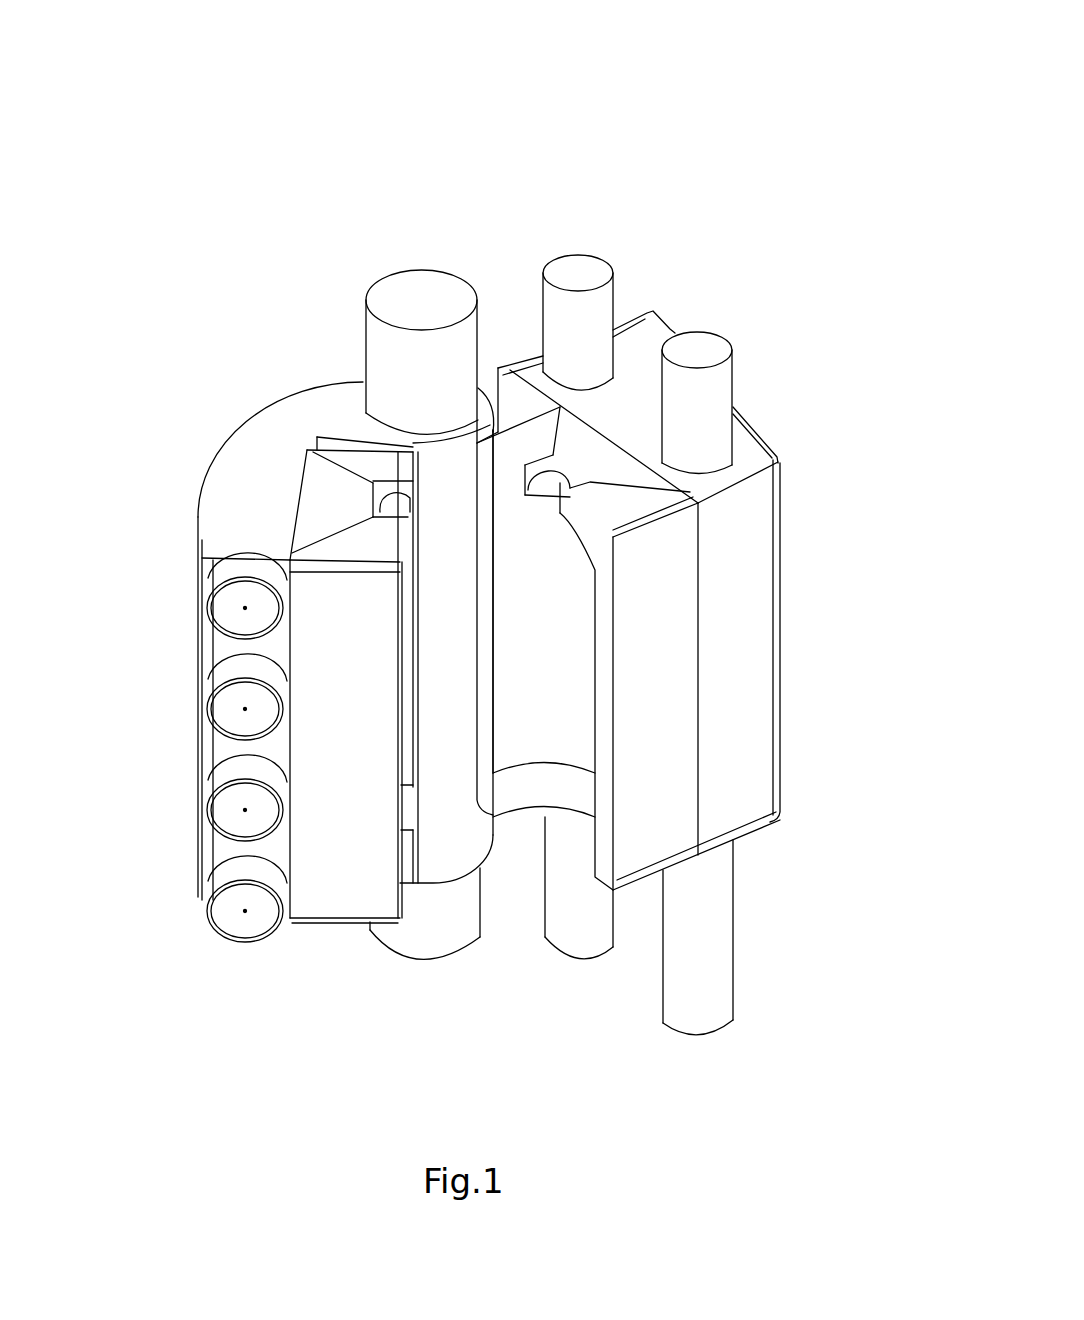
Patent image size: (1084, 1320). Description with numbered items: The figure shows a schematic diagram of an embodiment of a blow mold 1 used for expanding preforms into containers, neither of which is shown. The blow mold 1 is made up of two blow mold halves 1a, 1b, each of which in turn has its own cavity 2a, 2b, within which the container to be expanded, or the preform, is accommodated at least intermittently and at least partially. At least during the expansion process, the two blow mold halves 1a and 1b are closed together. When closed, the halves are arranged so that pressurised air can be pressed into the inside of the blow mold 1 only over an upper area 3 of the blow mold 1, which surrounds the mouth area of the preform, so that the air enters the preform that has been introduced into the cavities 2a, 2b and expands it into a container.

The blow mold 1 is at (335, 192).
The blow mold half 1a is at (243, 515).
The blow mold half 1b is at (723, 588).
The cavity 2a is at (350, 804).
The cavity 2b is at (549, 745).
The upper area 3 is at (573, 456).